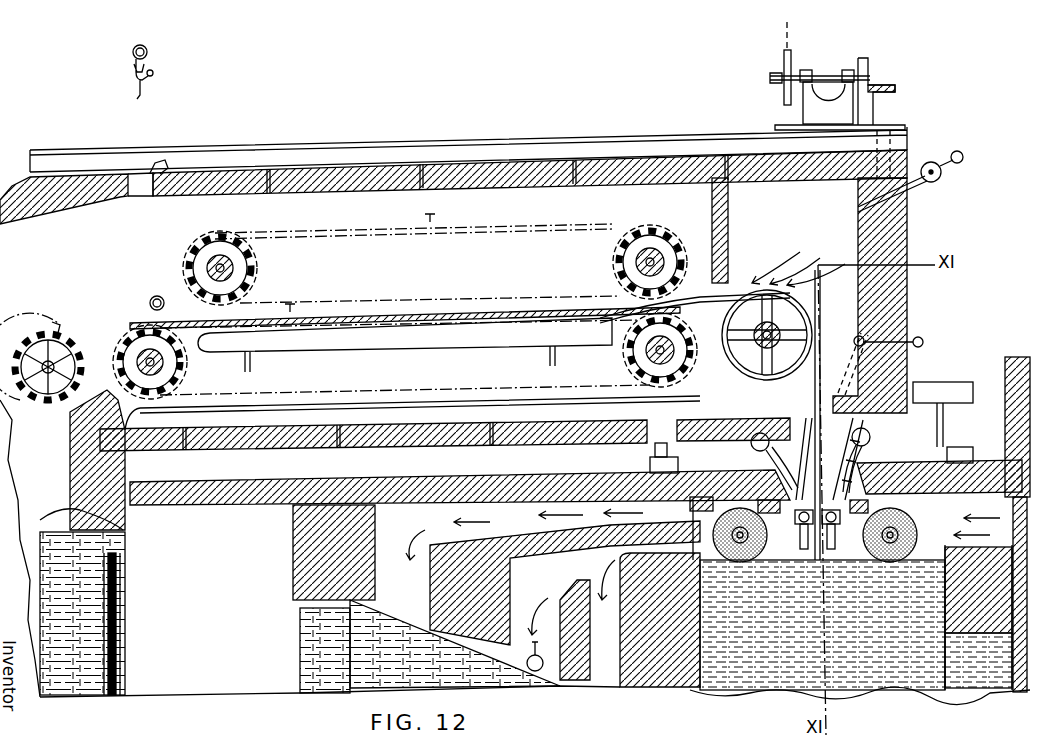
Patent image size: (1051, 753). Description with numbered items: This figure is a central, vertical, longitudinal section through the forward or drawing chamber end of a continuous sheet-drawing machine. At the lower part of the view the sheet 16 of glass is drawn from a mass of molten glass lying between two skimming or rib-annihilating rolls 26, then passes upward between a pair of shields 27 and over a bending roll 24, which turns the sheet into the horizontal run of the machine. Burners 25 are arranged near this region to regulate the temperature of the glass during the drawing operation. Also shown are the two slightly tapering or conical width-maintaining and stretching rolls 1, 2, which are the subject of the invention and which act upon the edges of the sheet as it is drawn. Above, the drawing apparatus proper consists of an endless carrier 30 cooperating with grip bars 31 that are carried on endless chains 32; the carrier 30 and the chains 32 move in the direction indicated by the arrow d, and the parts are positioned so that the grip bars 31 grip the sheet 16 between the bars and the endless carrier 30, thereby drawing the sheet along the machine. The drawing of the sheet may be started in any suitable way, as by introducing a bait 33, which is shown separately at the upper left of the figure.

The bait 33 is at (138, 84).
The grip bars 31 is at (432, 225).
The endless chains 32 is at (630, 234).
The arrow d is at (357, 318).
The sheet 16 is at (712, 306).
The bending roll 24 is at (745, 365).
The endless carrier 30 is at (628, 344).
The burners 25 is at (756, 451).
The roll 2 is at (800, 492).
The roll 1 is at (858, 470).
The skimming or rib-annihilating rolls 26 is at (762, 520).
The shields 27 is at (800, 545).